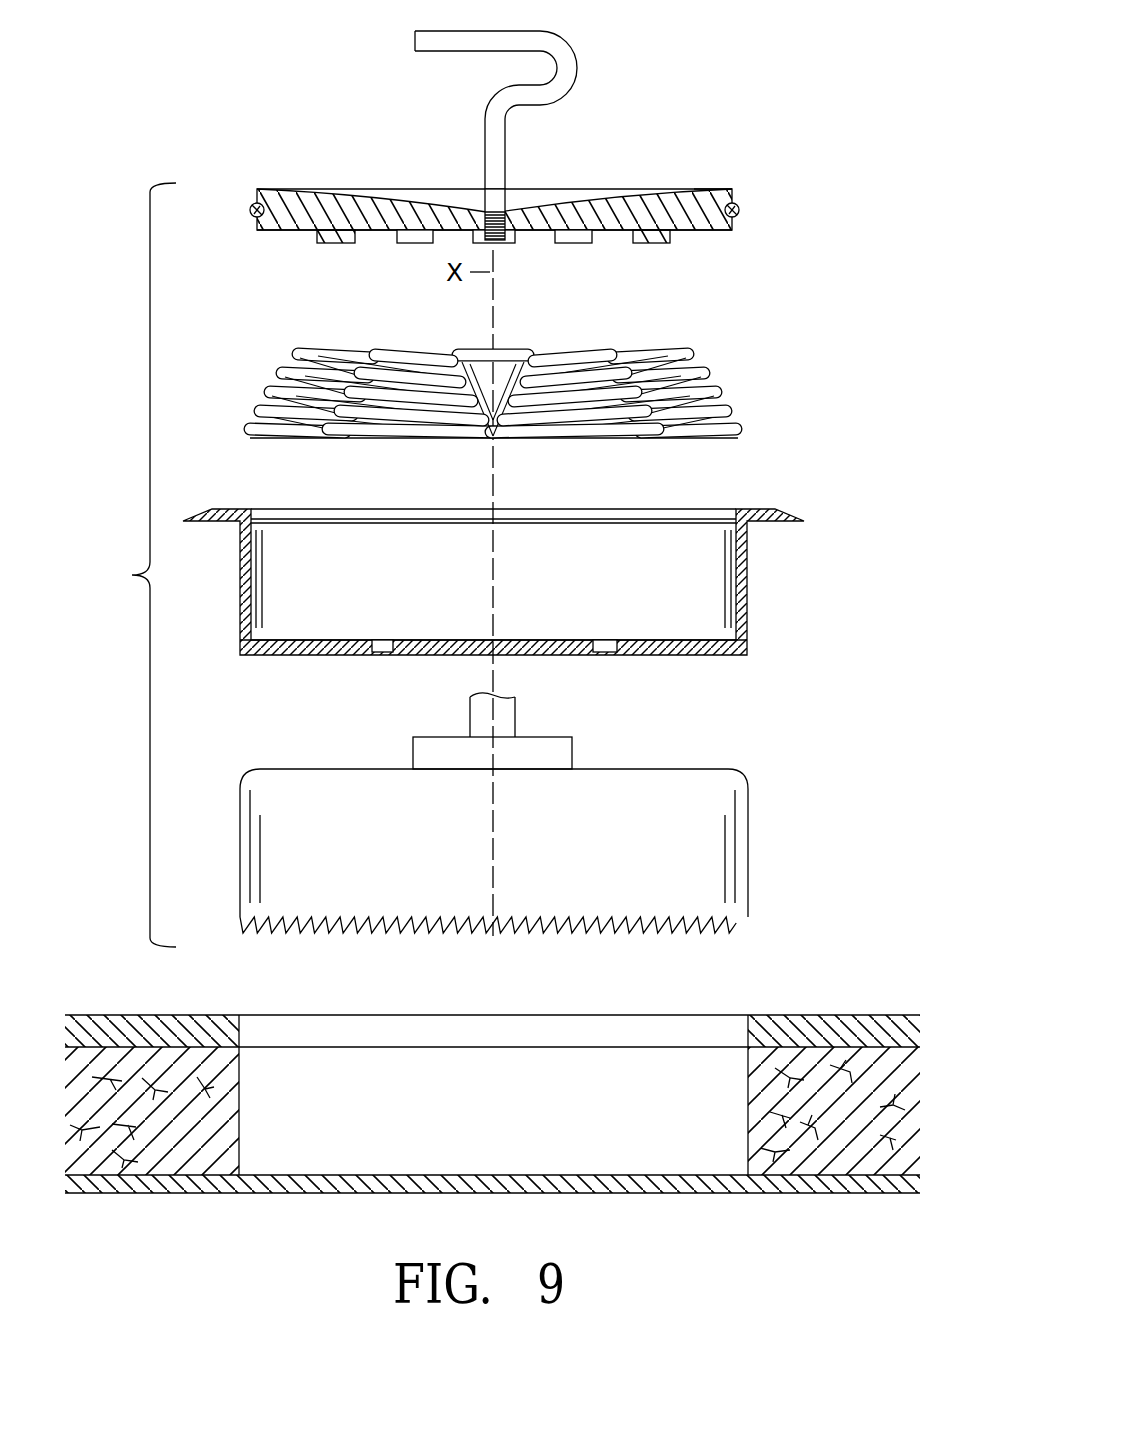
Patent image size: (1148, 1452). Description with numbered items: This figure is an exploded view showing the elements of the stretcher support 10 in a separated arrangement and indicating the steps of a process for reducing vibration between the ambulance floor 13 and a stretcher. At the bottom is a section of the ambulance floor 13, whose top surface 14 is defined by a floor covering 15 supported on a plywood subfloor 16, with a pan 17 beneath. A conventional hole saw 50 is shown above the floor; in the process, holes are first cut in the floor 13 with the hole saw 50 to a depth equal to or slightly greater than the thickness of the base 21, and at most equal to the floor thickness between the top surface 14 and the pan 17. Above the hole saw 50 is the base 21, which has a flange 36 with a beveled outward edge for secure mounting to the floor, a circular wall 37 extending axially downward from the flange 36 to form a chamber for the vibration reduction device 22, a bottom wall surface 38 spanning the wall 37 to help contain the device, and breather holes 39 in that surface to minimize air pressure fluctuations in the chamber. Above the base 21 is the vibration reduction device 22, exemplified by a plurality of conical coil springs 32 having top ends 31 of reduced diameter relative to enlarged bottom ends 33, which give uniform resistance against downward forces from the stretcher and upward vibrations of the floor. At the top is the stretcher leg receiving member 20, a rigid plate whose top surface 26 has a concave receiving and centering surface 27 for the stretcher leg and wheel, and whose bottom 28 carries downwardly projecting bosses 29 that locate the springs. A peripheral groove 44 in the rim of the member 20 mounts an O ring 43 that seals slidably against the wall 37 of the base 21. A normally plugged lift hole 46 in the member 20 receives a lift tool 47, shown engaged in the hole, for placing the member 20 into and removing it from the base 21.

The support 10 is at (849, 120).
The ambulance floor 13 is at (908, 988).
The top surface 14 is at (593, 1016).
The floor covering 15 is at (787, 1022).
The subfloor 16 is at (748, 1098).
The pan 17 is at (674, 1180).
The stretcher leg receiving member 20 is at (426, 168).
The base 21 is at (780, 488).
The vibration reduction device 22 is at (716, 344).
The top surface 26 is at (730, 189).
The concave stretcher leg or wheel receiving and centering surface 27 is at (603, 205).
The bottom 28 is at (714, 235).
The bosses 29 is at (655, 243).
The top ends 31 is at (632, 347).
The conical coil springs 32 is at (655, 362).
The bottom ends 33 is at (730, 433).
The flange 36 is at (217, 514).
The wall 37 is at (250, 575).
The bottom wall surface 38 is at (525, 641).
The breather holes 39 is at (605, 641).
The O ring 43 is at (738, 208).
The peripheral groove 44 is at (720, 189).
The lift hole 46 is at (507, 212).
The lift tool 47 is at (567, 68).
The hole saw 50 is at (703, 780).